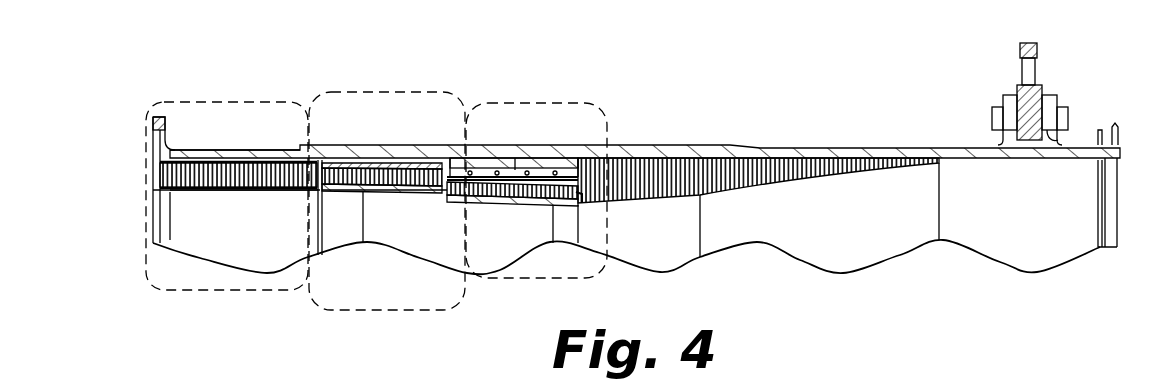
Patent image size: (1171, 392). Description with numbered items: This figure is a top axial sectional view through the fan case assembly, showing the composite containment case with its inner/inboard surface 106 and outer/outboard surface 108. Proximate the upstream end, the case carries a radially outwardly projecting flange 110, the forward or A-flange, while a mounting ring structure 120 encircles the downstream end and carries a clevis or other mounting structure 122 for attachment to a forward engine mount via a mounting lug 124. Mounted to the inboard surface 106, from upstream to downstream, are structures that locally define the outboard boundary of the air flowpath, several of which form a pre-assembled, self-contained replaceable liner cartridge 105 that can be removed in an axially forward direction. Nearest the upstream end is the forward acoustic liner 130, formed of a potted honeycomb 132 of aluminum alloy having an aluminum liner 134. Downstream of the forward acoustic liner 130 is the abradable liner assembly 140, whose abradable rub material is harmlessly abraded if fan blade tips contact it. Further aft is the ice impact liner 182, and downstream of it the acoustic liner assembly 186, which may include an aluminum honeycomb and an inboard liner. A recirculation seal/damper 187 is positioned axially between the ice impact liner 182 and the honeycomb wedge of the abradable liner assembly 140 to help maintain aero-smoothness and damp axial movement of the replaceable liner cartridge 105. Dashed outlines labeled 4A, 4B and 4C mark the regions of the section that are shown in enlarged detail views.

The replaceable liner cartridge 105 is at (370, 280).
The inner/inboard surface 106 is at (366, 163).
The outer/outboard surface 108 is at (400, 150).
The radially outwardly projecting flange 110 is at (163, 124).
The mounting ring structure 120 is at (1068, 86).
The mounting structure 122 is at (1048, 134).
The mounting lug 124 is at (1068, 86).
The forward acoustic liner 130 is at (272, 198).
The potted honeycomb 132 is at (258, 178).
The aluminum liner 134 is at (223, 230).
The abradable liner assembly 140 is at (406, 200).
The ice impact liner 182 is at (662, 165).
The acoustic liner assembly 186 is at (812, 175).
The recirculation seal/damper 187 is at (580, 205).
The detail view region 4A is at (386, 92).
The detail view region 4B is at (526, 103).
The detail view region 4C is at (240, 290).